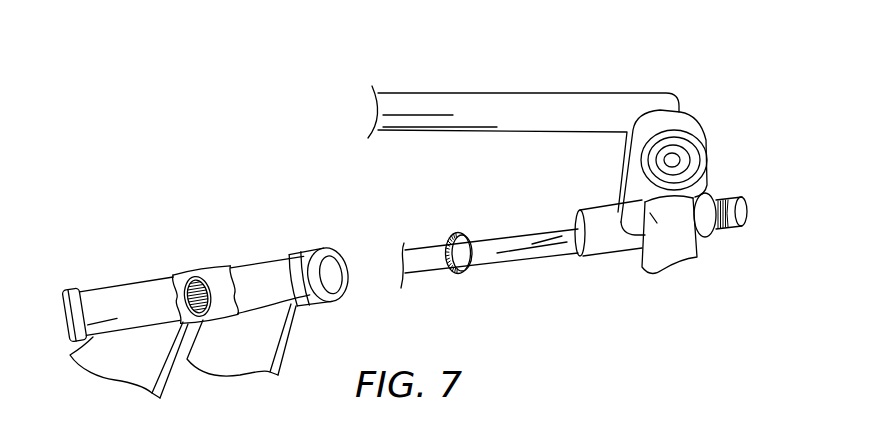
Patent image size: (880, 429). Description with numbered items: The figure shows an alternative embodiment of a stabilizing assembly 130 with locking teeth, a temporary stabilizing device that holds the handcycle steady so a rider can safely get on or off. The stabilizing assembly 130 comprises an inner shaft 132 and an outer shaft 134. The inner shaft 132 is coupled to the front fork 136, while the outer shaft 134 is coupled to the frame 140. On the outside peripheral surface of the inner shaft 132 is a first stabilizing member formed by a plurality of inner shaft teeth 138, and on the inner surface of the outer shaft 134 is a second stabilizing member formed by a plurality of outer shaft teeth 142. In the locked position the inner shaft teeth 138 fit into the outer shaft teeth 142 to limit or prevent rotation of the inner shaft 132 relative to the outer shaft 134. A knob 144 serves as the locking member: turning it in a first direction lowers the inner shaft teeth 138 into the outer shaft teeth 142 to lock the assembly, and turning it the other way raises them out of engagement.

The stabilizing assembly 130 is at (289, 153).
The inner shaft 132 is at (508, 242).
The outer shaft 134 is at (145, 293).
The front fork 136 is at (412, 105).
The inner shaft teeth 138 is at (465, 273).
The frame 140 is at (115, 370).
The outer shaft teeth 142 is at (213, 278).
The knob 144 is at (740, 208).